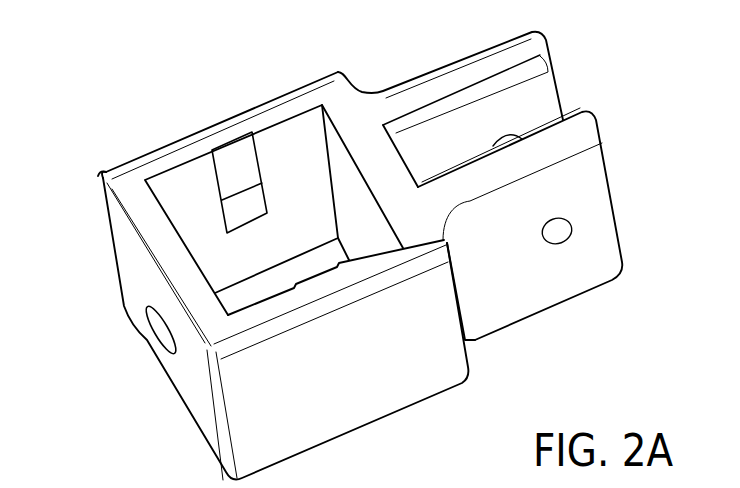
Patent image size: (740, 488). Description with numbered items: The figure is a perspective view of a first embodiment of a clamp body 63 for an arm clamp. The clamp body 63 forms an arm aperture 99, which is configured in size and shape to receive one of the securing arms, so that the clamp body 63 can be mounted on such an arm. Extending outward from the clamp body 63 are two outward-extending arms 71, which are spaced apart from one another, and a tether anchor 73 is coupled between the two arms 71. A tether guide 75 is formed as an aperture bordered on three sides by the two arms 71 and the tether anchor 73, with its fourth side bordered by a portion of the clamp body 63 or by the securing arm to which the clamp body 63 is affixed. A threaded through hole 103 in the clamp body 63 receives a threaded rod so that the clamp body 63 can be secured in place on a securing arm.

The clamp body 63 is at (102, 176).
The arm aperture 99 is at (316, 208).
The outward-extending arms 71 is at (585, 128).
The tether guide 75 is at (440, 155).
The tether anchor 73 is at (566, 226).
The threaded through hole 103 is at (160, 330).